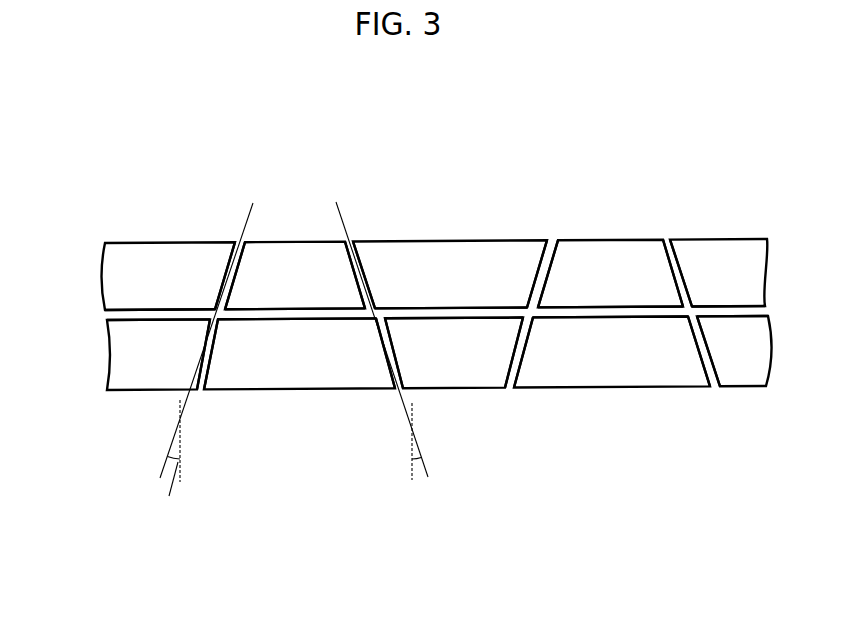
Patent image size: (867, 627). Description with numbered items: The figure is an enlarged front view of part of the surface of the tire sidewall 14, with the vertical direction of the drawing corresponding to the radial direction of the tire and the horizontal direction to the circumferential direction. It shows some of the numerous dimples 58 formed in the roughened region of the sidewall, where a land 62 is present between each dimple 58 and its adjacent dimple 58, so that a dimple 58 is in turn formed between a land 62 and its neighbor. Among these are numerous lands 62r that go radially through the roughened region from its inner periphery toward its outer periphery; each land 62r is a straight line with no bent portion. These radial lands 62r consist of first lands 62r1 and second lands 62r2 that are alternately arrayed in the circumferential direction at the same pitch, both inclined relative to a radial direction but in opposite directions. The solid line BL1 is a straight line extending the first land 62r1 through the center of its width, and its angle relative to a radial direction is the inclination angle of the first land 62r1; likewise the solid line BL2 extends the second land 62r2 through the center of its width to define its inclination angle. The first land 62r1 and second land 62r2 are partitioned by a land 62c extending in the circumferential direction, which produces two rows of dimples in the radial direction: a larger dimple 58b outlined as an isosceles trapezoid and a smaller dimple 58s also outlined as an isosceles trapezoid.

The sidewall 14 is at (92, 273).
The dimple 58 is at (421, 327).
The larger dimple 58b is at (140, 243).
The smaller dimple 58s is at (742, 433).
The land 62 is at (394, 329).
The land extending in a circumferential direction 62c is at (115, 316).
The land going radially through the roughened region 62r is at (454, 329).
The first land 62r1 is at (222, 508).
The second land 62r2 is at (373, 513).
The solid line BL1 is at (246, 222).
The solid line BL2 is at (343, 222).